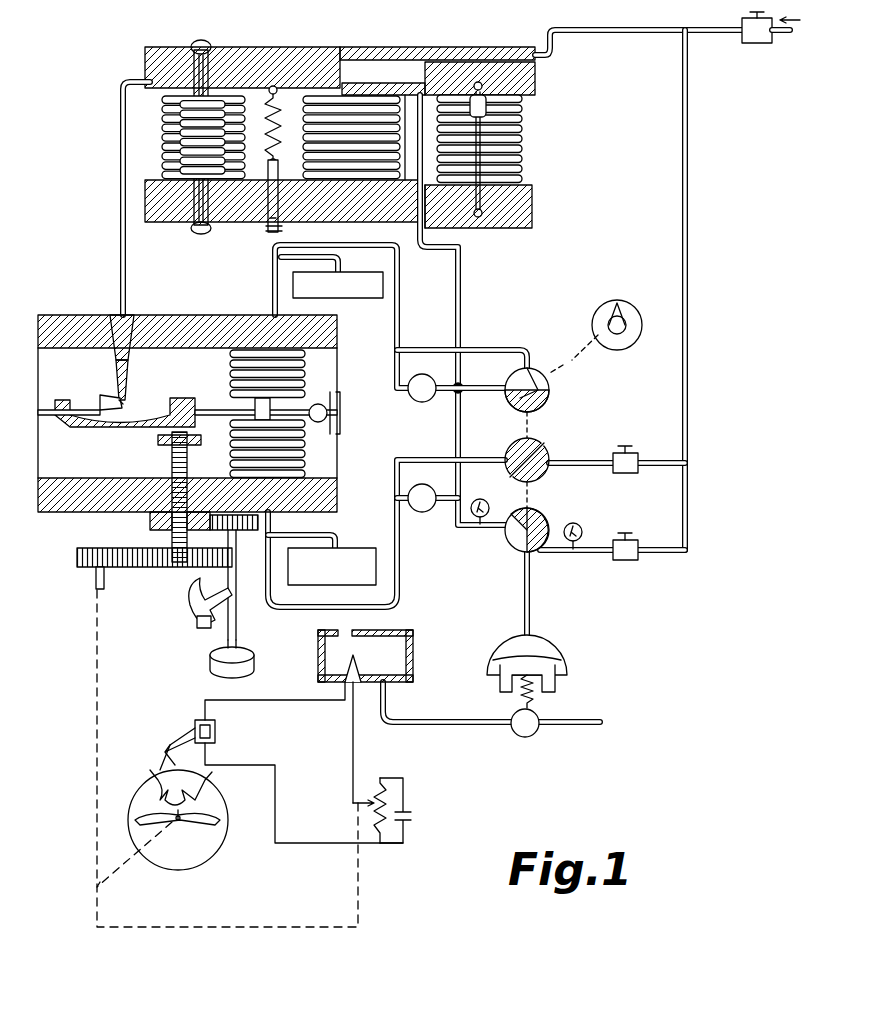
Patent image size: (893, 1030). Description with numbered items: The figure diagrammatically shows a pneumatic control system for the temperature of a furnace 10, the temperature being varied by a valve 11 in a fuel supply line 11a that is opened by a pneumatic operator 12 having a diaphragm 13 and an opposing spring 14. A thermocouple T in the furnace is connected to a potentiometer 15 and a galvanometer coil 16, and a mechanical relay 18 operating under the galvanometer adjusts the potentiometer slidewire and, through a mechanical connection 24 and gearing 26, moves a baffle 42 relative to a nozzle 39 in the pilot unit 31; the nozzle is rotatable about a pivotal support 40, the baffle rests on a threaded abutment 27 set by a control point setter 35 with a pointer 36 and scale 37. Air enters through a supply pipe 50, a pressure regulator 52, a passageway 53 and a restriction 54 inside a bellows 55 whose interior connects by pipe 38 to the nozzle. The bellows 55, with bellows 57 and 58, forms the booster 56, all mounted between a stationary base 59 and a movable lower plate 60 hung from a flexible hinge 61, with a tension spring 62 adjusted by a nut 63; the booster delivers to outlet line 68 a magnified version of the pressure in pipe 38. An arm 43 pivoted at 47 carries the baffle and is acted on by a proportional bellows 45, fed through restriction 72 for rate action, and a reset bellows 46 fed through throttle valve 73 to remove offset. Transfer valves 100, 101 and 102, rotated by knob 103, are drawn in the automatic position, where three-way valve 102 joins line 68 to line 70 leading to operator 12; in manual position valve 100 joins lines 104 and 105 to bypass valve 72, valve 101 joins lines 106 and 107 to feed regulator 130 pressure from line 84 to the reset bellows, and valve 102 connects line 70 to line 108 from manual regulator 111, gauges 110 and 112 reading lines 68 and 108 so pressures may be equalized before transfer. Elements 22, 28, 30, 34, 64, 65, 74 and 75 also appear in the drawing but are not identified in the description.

The furnace 10 is at (370, 661).
The valve 11 is at (520, 738).
The fuel supply line 11a is at (440, 725).
The pneumatic operator 12 is at (576, 674).
The diaphragm 13 is at (500, 686).
The spring 14 is at (533, 700).
The potentiometer 15 is at (386, 835).
The galvanometer coil 16 is at (216, 731).
The mechanical relay 18 is at (102, 781).
The relay mechanism 22 is at (205, 850).
The mechanical connection 24 is at (113, 873).
The gearing 26 is at (170, 568).
The threaded abutment 27 is at (172, 542).
The rack 28 is at (170, 470).
The housing 30 is at (60, 512).
The pilot unit 31 is at (185, 307).
The gear 34 is at (248, 532).
The control point setter 35 is at (210, 662).
The pointer 36 is at (198, 620).
The scale 37 is at (205, 592).
The pipe 38 is at (122, 236).
The nozzle 39 is at (110, 396).
The pivotal support 40 is at (115, 326).
The baffle 42 is at (172, 398).
The arm 43 is at (218, 408).
The proportional bellows 45 is at (306, 370).
The reset bellows 46 is at (306, 460).
The pivot 47 is at (325, 404).
The supply pipe 50 is at (785, 36).
The pressure regulator 52 is at (750, 43).
The passageway 53 is at (392, 60).
The restriction 54 is at (182, 133).
The bellows 55 is at (165, 150).
The pneumatic relay 56 is at (316, 34).
The bellows 57 is at (523, 138).
The bellows 58 is at (298, 130).
The stationary base 59 is at (237, 60).
The movable lower plate 60 is at (512, 225).
The flexible hinge 61 is at (412, 112).
The tension spring 62 is at (268, 160).
The nut 63 is at (280, 228).
The bottom plate 64 is at (533, 190).
The rod 65 is at (480, 218).
The outlet pipe line 68 is at (462, 322).
The line 70 is at (523, 596).
The restriction 72 is at (412, 398).
The throttle valve 73 is at (422, 512).
The capacity tank 74 is at (352, 556).
The capacity tank 75 is at (340, 300).
The line 84 is at (688, 245).
The valve 100 is at (549, 390).
The valve 101 is at (540, 448).
The three-way valve 102 is at (537, 514).
The knob 103 is at (638, 345).
The line 104 is at (485, 350).
The line 105 is at (490, 393).
The line 106 is at (582, 460).
The line 107 is at (410, 458).
The line 108 is at (595, 552).
The pressure gauge 110 is at (481, 498).
The pressure regulator 111 is at (628, 562).
The pressure gauge 112 is at (580, 527).
The pressure regulator 130 is at (632, 470).
The thermocouple T is at (345, 665).